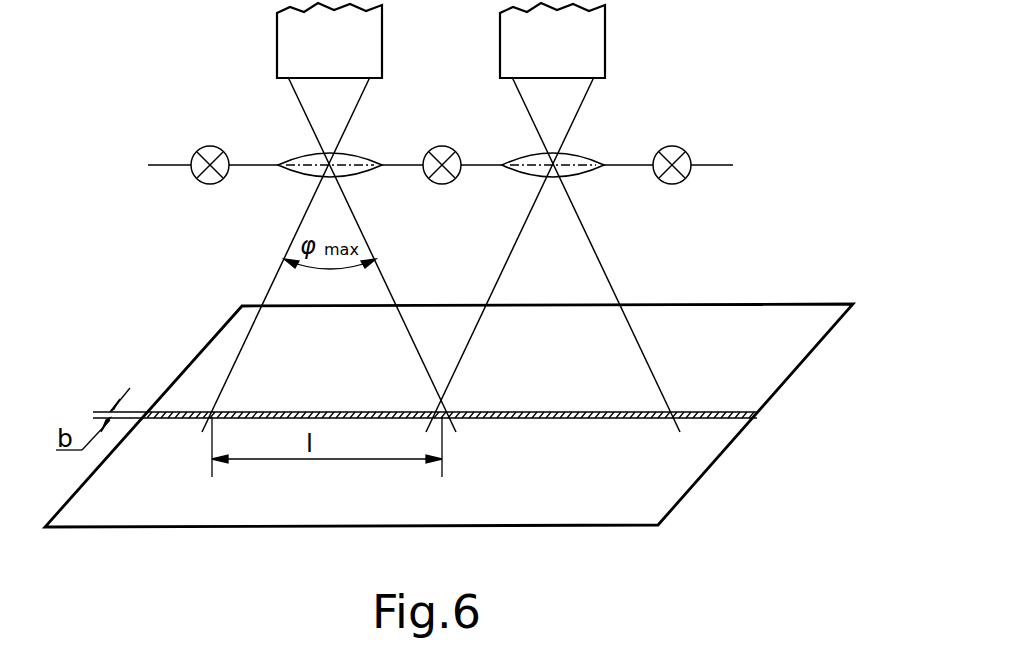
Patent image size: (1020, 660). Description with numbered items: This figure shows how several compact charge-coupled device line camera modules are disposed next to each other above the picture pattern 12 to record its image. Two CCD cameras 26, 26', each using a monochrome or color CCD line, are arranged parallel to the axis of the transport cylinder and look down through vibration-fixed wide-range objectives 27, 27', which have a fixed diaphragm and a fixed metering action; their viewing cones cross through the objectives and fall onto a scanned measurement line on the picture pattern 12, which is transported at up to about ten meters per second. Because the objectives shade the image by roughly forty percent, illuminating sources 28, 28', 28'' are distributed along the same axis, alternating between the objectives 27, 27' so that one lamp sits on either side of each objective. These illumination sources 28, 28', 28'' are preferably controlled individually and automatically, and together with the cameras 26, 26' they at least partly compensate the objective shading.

The picture pattern 12 is at (660, 316).
The charge-coupled device CCD camera 26 is at (376, 40).
The charge-coupled device CCD camera 26' is at (607, 40).
The wide-range objective 27 is at (313, 198).
The wide-range objective 27' is at (535, 195).
The illumination source 28 is at (217, 142).
The illumination source 28' is at (453, 142).
The illumination source 28'' is at (688, 142).